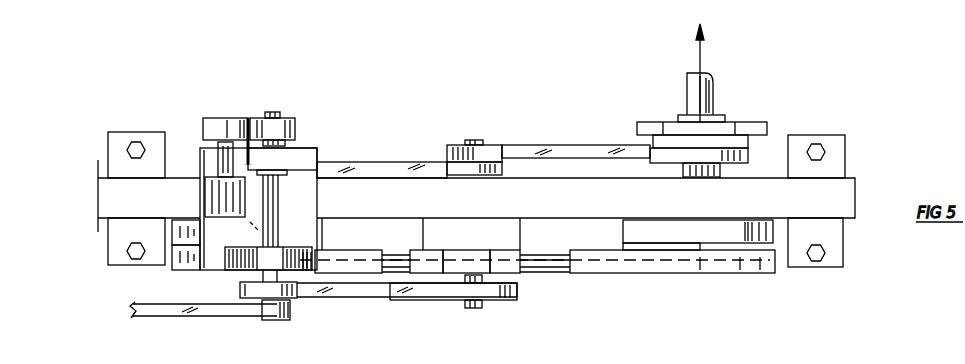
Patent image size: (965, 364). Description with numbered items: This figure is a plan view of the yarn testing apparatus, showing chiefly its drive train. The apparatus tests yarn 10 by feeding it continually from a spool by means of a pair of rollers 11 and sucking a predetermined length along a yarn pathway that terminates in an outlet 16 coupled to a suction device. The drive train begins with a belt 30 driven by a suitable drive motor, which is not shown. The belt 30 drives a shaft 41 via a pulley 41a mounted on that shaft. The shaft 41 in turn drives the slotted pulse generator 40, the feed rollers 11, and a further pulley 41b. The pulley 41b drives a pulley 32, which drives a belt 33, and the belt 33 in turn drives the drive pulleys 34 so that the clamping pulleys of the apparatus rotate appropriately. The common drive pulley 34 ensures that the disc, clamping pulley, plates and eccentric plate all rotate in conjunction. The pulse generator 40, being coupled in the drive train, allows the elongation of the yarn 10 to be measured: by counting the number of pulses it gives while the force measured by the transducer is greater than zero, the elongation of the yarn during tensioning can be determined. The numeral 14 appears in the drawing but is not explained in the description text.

The yarn 10 is at (700, 48).
The rollers 11 is at (215, 122).
The mounting bracket 14 is at (175, 253).
The outlet 16 is at (705, 98).
The belt 30 is at (175, 307).
The pulley 32 is at (447, 177).
The belt 33 is at (383, 163).
The drive pulley 34 is at (750, 152).
The slotted pulse generator 40 is at (290, 253).
The shaft 41 is at (270, 198).
The pulley 41a is at (282, 318).
The pulley 41b is at (297, 282).